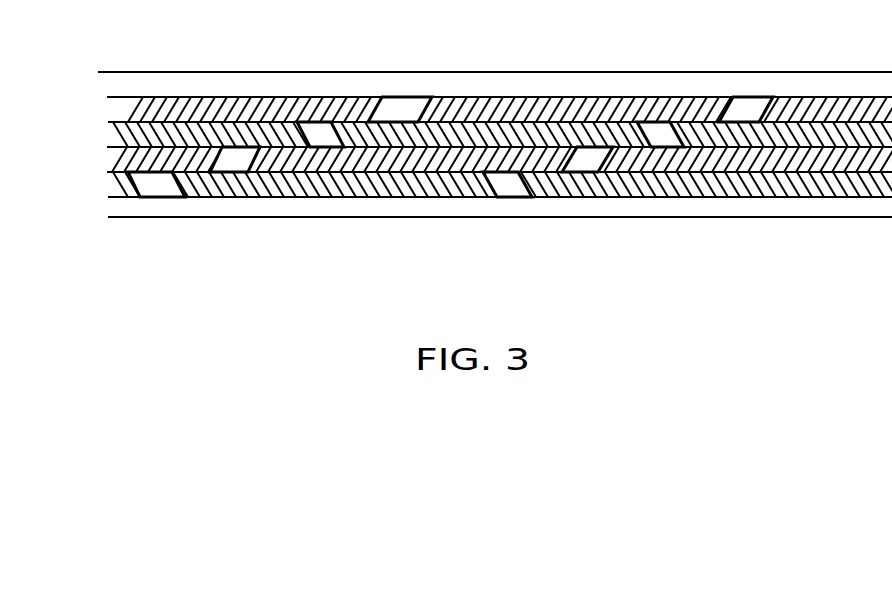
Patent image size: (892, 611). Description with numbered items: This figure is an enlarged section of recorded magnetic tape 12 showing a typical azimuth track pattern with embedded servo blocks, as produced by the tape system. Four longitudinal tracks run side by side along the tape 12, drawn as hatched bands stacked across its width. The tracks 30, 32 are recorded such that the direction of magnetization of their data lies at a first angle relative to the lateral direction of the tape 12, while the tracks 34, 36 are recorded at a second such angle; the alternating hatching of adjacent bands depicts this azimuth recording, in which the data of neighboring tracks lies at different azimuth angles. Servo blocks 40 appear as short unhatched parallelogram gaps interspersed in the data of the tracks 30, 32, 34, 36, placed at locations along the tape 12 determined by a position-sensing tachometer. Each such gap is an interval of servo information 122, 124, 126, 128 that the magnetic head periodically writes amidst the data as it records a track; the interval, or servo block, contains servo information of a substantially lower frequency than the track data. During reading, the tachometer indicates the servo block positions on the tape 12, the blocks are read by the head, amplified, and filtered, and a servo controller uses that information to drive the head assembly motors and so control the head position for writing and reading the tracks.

The tape 12 is at (762, 72).
The track 30 is at (112, 180).
The track 32 is at (108, 135).
The track 34 is at (108, 157).
The track 36 is at (108, 111).
The servo blocks 40 is at (390, 97).
The interval of servo information 122 is at (516, 197).
The interval of servo information 124 is at (585, 172).
The interval of servo information 126 is at (668, 148).
The interval of servo information 128 is at (740, 123).